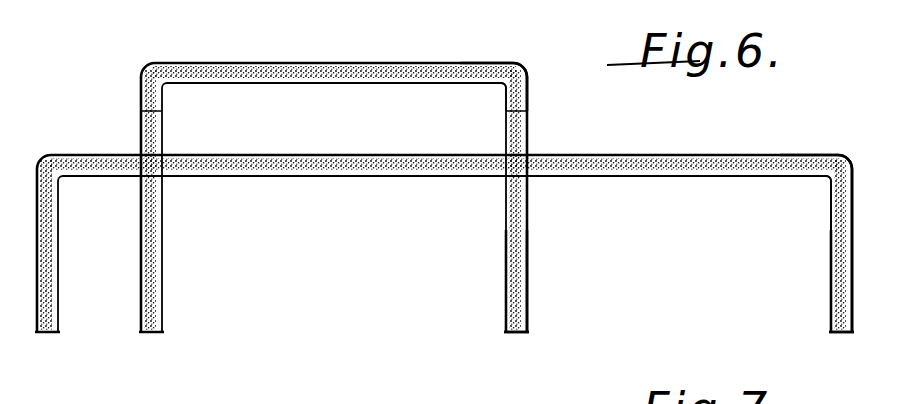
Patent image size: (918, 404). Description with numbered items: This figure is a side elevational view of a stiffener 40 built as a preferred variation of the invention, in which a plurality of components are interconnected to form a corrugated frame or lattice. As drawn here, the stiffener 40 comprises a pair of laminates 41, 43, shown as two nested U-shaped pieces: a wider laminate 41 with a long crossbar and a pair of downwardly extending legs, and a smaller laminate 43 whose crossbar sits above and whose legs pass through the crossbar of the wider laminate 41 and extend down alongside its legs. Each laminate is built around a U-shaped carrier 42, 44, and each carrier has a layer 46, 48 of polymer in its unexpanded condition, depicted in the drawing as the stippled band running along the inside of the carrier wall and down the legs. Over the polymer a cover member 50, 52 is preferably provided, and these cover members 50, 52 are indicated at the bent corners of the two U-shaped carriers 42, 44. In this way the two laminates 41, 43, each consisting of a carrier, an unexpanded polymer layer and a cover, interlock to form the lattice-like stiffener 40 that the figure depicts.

The stiffener 40 is at (293, 181).
The laminate 41 is at (643, 178).
The U-shaped carrier 42 is at (752, 228).
The laminate 43 is at (285, 63).
The U-shaped carrier 44 is at (417, 84).
The layer of polymer 46 is at (838, 333).
The layer of polymer 48 is at (515, 333).
The cover member 50 is at (502, 63).
The cover member 52 is at (733, 155).